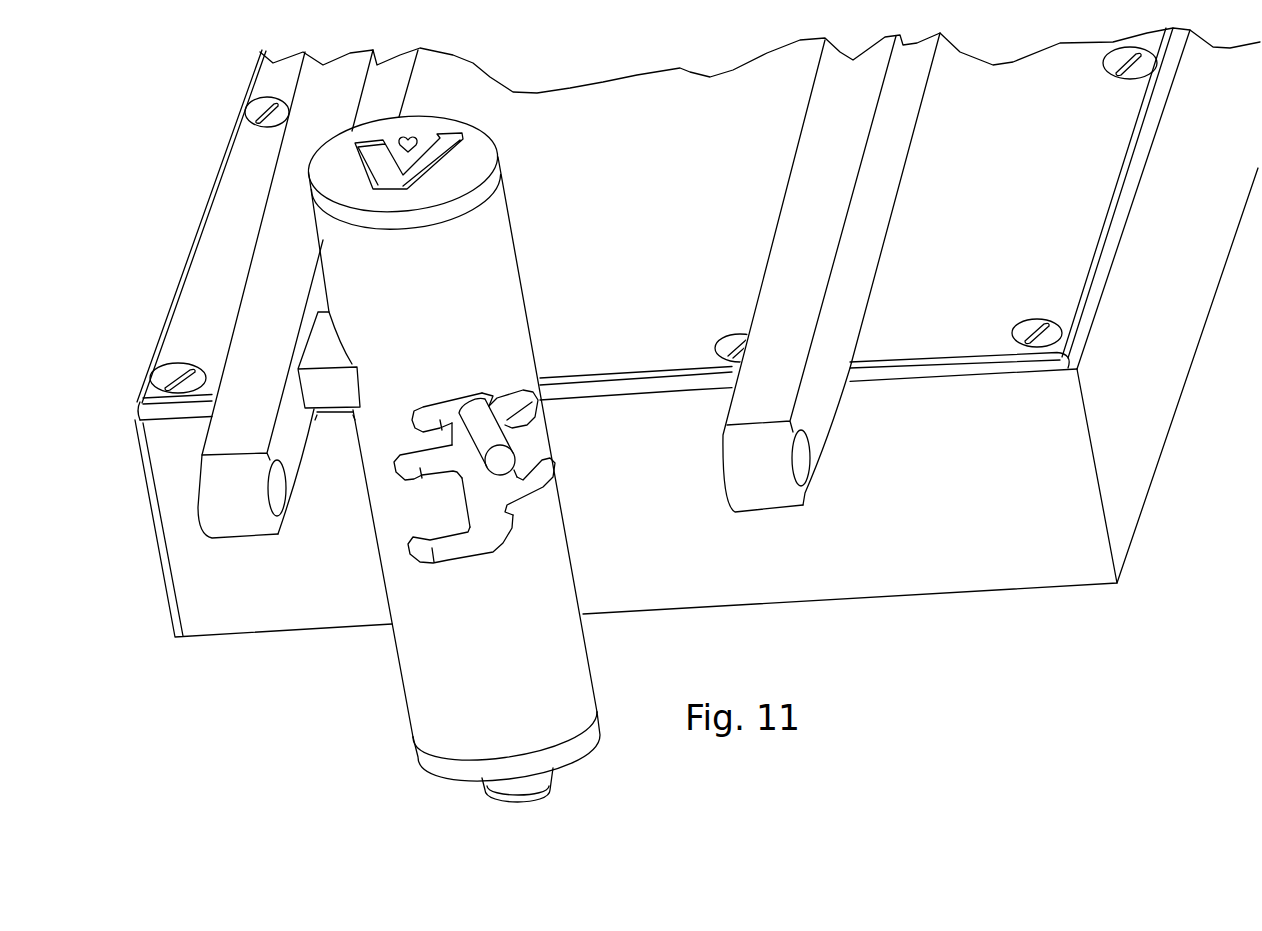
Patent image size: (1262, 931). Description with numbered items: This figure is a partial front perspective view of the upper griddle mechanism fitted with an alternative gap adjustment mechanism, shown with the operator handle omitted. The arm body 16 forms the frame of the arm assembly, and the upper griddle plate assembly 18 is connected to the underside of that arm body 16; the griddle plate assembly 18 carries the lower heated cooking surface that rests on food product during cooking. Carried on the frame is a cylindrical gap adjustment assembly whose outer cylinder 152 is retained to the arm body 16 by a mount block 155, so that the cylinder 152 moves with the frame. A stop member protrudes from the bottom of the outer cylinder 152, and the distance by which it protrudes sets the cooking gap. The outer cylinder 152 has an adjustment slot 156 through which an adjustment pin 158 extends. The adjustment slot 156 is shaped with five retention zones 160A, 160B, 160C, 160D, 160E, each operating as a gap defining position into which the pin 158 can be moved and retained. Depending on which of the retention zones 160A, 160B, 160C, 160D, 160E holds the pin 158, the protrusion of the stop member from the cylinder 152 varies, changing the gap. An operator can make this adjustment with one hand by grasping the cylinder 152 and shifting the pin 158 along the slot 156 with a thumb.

The arm body 16 is at (260, 292).
The upper griddle plate assembly 18 is at (1140, 373).
The outer cylinder 152 is at (455, 222).
The mount block 155 is at (325, 350).
The adjustment slot 156 is at (484, 393).
The adjustment pin 158 is at (490, 447).
The retention zone 160A is at (427, 407).
The retention zone 160B is at (527, 408).
The retention zone 160C is at (421, 468).
The retention zone 160D is at (533, 477).
The retention zone 160E is at (433, 562).